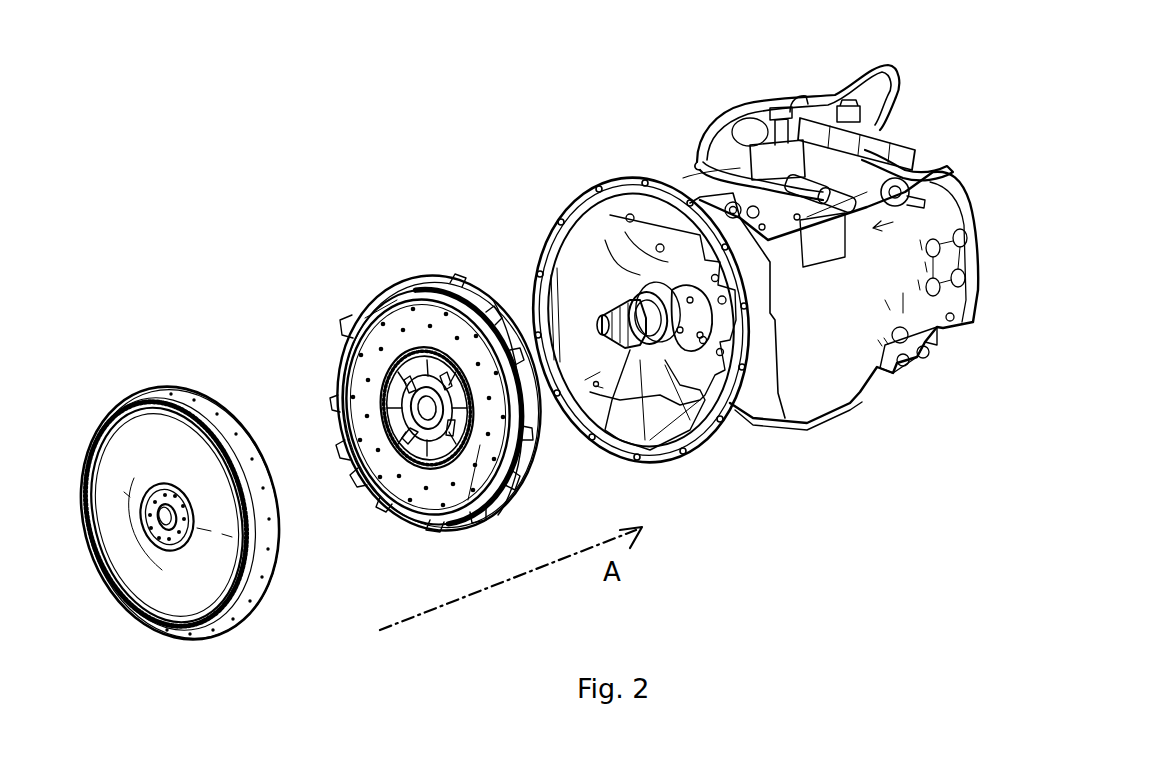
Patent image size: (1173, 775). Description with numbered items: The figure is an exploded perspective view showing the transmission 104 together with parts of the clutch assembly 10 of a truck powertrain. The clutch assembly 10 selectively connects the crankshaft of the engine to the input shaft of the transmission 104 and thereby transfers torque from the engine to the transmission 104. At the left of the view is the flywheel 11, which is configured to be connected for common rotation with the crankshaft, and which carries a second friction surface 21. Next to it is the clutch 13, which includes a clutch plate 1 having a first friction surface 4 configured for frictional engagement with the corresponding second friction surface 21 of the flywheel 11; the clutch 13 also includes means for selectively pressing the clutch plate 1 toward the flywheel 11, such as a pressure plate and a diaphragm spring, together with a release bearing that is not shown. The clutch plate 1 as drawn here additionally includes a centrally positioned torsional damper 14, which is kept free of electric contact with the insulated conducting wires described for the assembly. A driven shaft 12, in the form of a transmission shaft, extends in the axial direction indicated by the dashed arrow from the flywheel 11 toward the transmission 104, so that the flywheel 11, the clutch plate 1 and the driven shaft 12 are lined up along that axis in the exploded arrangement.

The clutch assembly 10 is at (372, 113).
The flywheel 11 is at (209, 400).
The second friction surface 21 is at (278, 503).
The clutch 13 is at (368, 250).
The clutch plate 1 is at (370, 482).
The first friction surface 4 is at (362, 383).
The torsional damper 14 is at (347, 342).
The transmission 104 is at (752, 88).
The driven shaft 12 is at (614, 322).